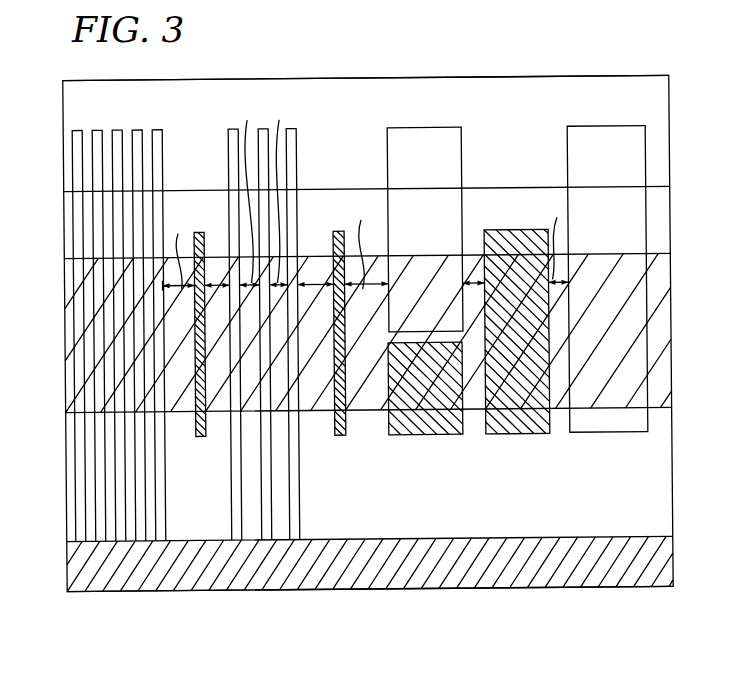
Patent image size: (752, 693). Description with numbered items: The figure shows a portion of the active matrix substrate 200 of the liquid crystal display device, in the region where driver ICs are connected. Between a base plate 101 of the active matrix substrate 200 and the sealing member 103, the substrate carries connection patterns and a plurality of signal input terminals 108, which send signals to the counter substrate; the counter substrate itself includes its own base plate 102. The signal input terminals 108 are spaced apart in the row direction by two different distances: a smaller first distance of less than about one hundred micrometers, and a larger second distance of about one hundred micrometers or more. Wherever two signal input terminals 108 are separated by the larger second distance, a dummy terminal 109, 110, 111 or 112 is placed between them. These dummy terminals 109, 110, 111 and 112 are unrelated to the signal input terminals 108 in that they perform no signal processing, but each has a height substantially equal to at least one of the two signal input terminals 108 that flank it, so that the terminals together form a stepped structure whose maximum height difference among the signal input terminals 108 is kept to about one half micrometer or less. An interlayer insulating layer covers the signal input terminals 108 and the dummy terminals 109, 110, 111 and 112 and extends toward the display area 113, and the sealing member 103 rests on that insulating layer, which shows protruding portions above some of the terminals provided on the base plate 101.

The active matrix substrate 200 is at (651, 45).
The base plate 101 is at (367, 112).
The base plate 102 is at (216, 199).
The sealing member 103 is at (661, 268).
The signal input terminals 108 is at (81, 486).
The dummy terminal 109 is at (196, 441).
The dummy terminal 110 is at (336, 437).
The dummy terminal 111 is at (526, 435).
The dummy terminal 112 is at (436, 433).
The display area 113 is at (148, 576).